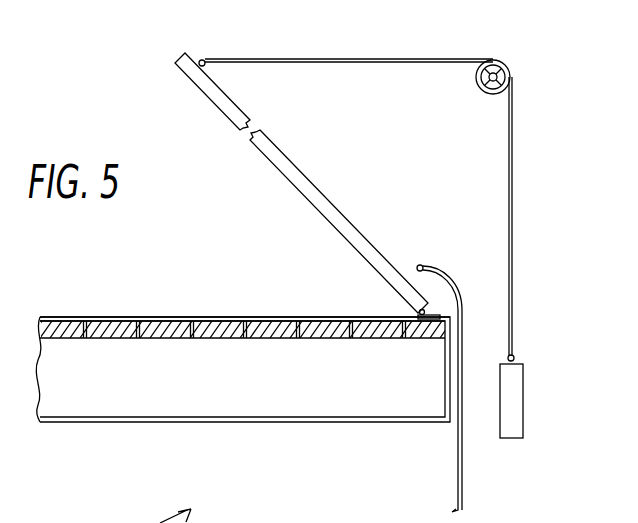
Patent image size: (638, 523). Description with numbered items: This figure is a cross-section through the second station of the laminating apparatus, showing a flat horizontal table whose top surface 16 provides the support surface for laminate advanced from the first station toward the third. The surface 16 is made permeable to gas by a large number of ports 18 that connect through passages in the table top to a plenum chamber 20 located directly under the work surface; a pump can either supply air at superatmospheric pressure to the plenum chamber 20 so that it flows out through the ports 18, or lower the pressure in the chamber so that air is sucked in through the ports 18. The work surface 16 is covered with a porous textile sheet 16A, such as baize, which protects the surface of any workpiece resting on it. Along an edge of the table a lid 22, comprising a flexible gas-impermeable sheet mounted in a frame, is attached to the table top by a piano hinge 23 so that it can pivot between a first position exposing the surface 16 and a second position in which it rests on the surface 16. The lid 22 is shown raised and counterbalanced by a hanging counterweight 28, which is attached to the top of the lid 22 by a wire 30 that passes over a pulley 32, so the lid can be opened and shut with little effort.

The top surface 16 is at (163, 330).
The porous textile sheet 16A is at (108, 320).
The ports 18 is at (192, 342).
The plenum chamber 20 is at (321, 382).
The lid 22 is at (317, 203).
The piano hinge 23 is at (430, 310).
The counterweight 28 is at (513, 385).
The wire 30 is at (248, 60).
The pulley 32 is at (507, 66).